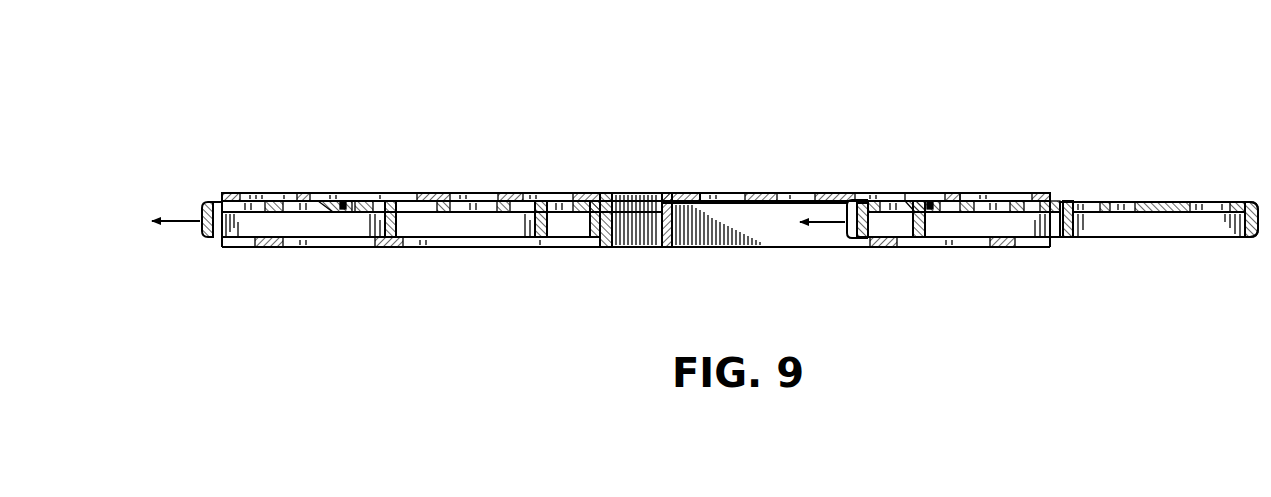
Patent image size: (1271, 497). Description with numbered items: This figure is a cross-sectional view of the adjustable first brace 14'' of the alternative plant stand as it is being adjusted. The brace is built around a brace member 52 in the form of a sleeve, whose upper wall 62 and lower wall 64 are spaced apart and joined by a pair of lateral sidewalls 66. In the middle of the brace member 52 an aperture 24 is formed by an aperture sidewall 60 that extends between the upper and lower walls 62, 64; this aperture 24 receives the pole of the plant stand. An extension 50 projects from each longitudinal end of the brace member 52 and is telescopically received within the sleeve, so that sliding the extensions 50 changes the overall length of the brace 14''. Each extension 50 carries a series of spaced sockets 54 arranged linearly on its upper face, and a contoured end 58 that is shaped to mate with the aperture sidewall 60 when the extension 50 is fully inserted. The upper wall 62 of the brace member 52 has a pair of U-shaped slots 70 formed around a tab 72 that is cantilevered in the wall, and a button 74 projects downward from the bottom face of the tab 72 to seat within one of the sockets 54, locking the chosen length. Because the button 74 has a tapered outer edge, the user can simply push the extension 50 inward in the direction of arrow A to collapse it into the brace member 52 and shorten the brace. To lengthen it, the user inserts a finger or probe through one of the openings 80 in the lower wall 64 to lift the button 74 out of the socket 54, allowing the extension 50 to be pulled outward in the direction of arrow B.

The first brace 14'' is at (641, 147).
The first aperture 24 is at (644, 246).
The extension 50 is at (215, 241).
The brace member 52 is at (275, 191).
The socket 54 is at (482, 200).
The contoured end 58 is at (612, 218).
The aperture sidewall 60 is at (597, 246).
The upper wall 62 is at (506, 200).
The lower wall 64 is at (266, 248).
The lateral sidewall 66 is at (774, 225).
The U-shaped slot 70 is at (350, 201).
The tab 72 is at (343, 204).
The button 74 is at (338, 212).
The opening 80 is at (355, 247).
The arrow A is at (822, 223).
The arrow B is at (173, 221).